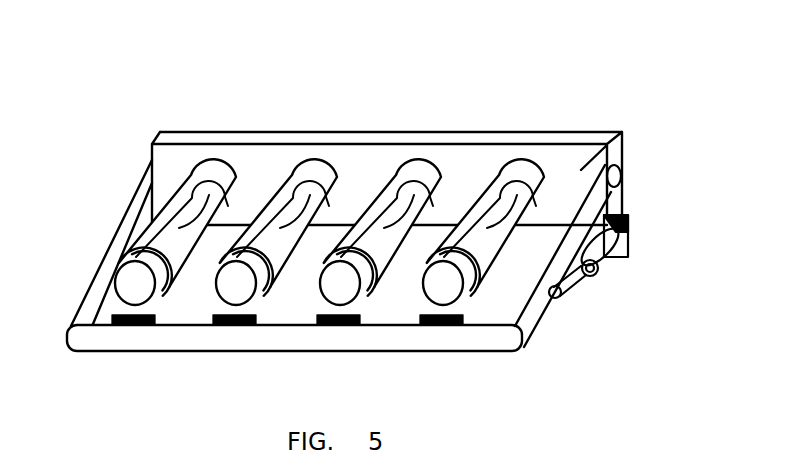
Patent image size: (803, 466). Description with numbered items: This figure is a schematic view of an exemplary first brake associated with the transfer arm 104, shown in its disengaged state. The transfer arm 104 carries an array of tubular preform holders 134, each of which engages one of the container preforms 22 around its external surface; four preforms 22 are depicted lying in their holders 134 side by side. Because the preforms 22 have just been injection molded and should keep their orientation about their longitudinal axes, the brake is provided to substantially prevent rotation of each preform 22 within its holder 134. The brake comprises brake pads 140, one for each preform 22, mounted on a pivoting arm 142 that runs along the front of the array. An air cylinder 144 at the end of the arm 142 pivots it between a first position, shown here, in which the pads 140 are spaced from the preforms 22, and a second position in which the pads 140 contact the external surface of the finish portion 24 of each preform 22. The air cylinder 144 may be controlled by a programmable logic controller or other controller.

The transfer arm 104 is at (611, 132).
The container preforms 22 is at (238, 185).
The finish portion 24 is at (146, 254).
The tubular preform holders 134 is at (208, 167).
The brake pads 140 is at (147, 327).
The pivoting arm 142 is at (487, 343).
The air cylinder 144 is at (612, 268).